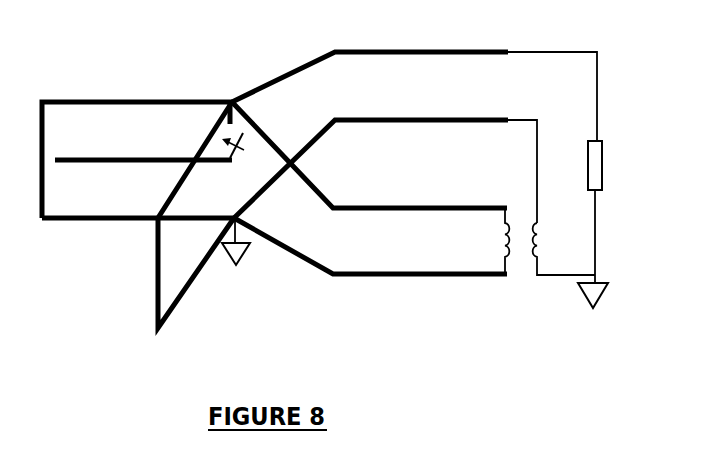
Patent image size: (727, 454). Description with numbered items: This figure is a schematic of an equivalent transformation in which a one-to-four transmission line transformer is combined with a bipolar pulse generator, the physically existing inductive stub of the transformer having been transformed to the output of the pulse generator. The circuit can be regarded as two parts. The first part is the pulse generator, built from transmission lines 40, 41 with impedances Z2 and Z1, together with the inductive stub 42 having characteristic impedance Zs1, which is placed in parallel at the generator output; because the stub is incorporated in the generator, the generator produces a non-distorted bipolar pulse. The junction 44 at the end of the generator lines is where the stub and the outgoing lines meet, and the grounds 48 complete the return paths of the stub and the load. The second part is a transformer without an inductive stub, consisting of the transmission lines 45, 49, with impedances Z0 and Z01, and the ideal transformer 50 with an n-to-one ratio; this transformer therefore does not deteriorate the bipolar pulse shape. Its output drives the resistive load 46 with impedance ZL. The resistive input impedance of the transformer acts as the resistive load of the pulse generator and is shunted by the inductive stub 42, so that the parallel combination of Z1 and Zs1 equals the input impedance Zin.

The transmission line 40 is at (102, 110).
The transmission line 41 is at (128, 213).
The inductive stub 42 is at (168, 283).
The junction node with current arrow 44 is at (223, 93).
The transmission line 45 is at (377, 72).
The resistive load 46 is at (607, 157).
The ground 48 is at (415, 273).
The transmission line 49 is at (377, 258).
The ideal transformer 50 is at (518, 275).